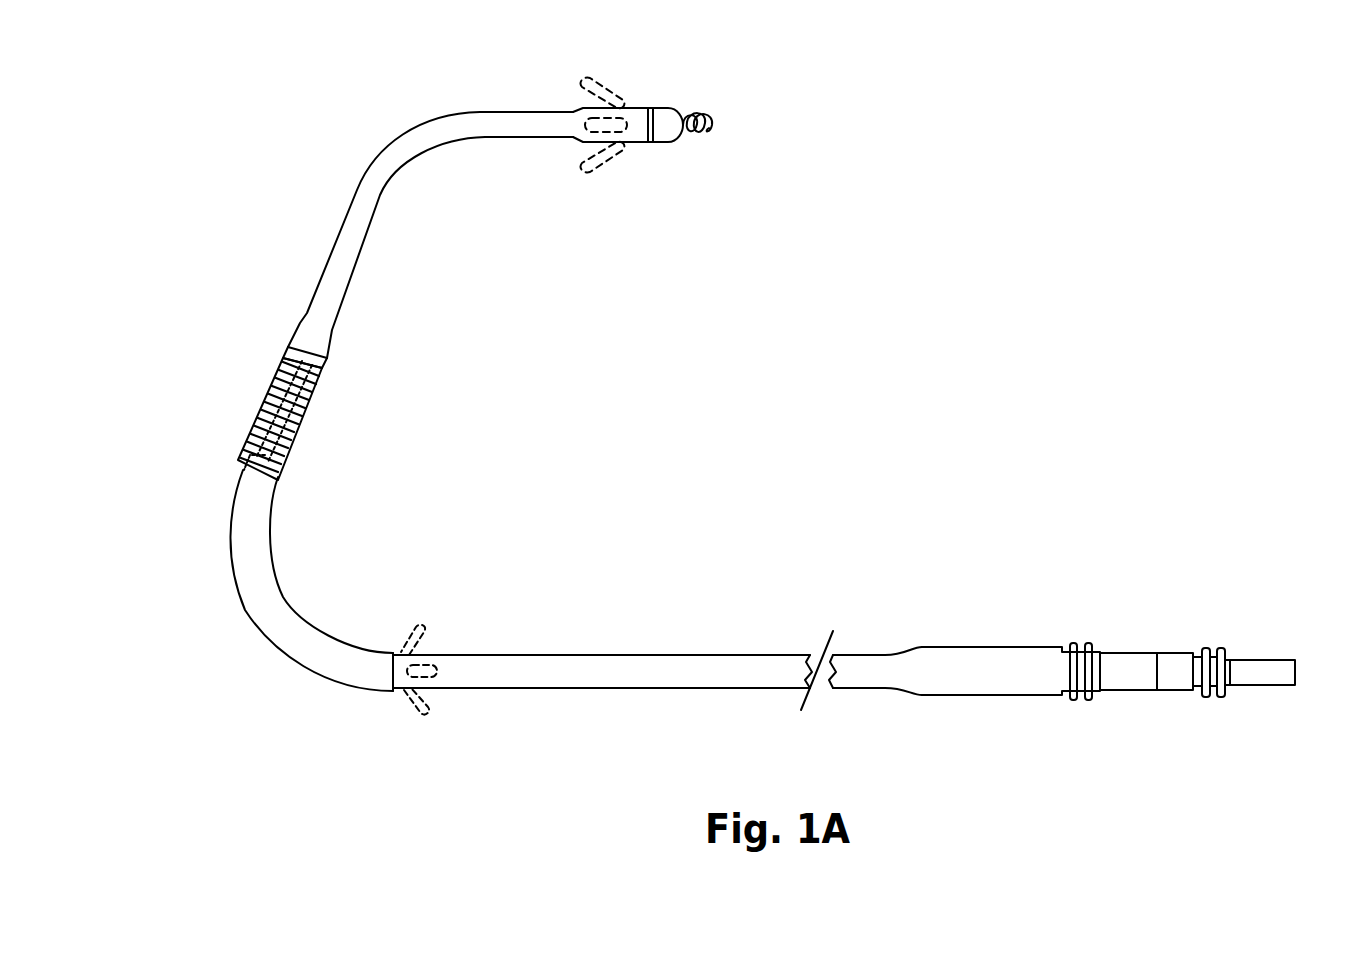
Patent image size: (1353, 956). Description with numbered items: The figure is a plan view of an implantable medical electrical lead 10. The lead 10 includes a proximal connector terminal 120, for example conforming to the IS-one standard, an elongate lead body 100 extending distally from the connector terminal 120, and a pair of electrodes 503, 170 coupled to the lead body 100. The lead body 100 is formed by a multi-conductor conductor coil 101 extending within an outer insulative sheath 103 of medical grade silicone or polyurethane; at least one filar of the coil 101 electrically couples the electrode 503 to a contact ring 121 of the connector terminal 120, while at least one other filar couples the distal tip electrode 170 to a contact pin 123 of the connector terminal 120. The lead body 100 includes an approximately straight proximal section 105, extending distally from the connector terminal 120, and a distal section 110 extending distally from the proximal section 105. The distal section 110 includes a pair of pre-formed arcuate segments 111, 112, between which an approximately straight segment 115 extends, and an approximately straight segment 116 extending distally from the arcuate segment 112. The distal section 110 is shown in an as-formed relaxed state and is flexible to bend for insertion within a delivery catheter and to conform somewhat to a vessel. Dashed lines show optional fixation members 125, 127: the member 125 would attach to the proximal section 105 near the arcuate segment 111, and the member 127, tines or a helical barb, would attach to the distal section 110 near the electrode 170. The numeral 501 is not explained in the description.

The implantable medical electrical lead 10 is at (998, 188).
The lead body 100 is at (345, 560).
The conductor coil 101 is at (290, 405).
The outer insulative sheath 103 is at (550, 668).
The proximal section 105 is at (540, 710).
The distal section 110 is at (262, 148).
The pre-formed arcuate segment 111 is at (246, 620).
The pre-formed arcuate segment 112 is at (382, 136).
The straight segment 115 is at (388, 340).
The straight segment 116 is at (511, 92).
The connector terminal 120 is at (1131, 680).
The contact ring 121 is at (1128, 660).
The contact pin 123 is at (1285, 640).
The fixation member 125 is at (403, 708).
The fixation member 127 is at (603, 82).
The distal tip electrode 170 is at (672, 108).
The lower tubular segment 501 is at (244, 512).
The electrode 503 is at (292, 350).